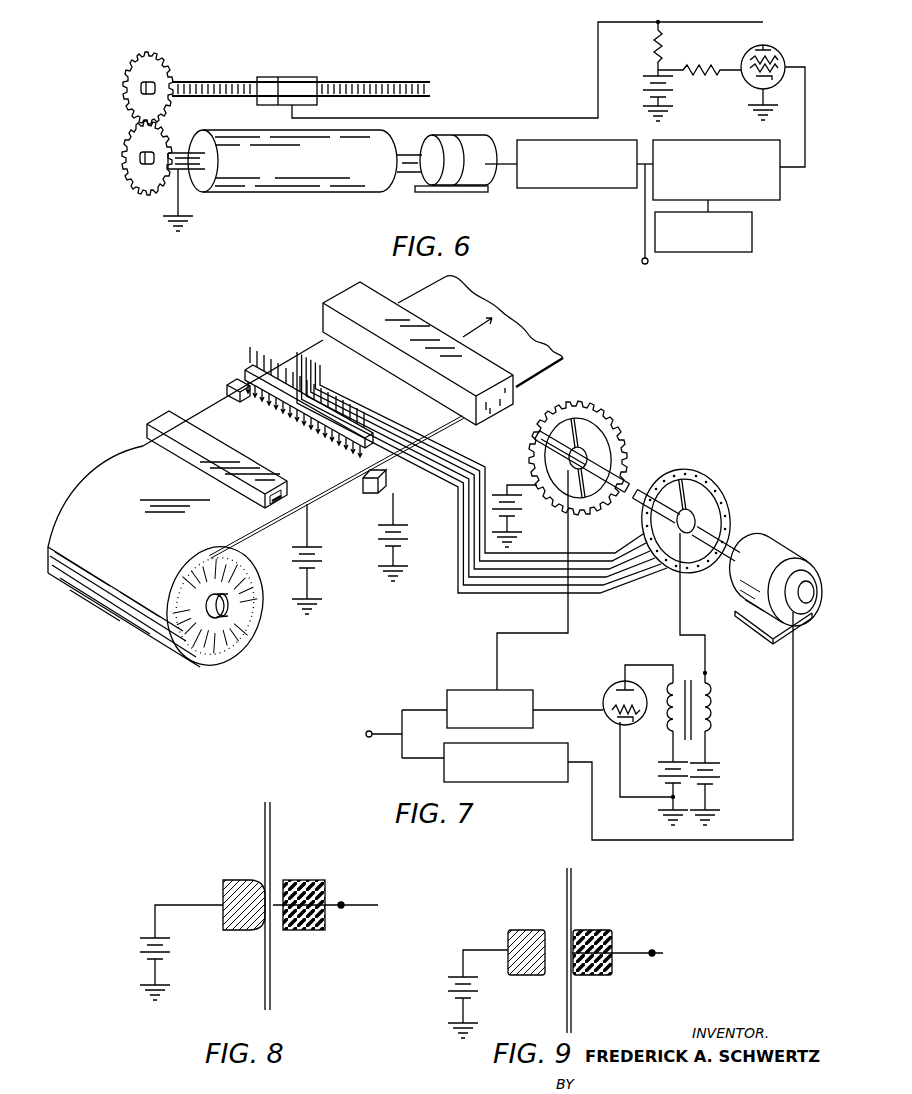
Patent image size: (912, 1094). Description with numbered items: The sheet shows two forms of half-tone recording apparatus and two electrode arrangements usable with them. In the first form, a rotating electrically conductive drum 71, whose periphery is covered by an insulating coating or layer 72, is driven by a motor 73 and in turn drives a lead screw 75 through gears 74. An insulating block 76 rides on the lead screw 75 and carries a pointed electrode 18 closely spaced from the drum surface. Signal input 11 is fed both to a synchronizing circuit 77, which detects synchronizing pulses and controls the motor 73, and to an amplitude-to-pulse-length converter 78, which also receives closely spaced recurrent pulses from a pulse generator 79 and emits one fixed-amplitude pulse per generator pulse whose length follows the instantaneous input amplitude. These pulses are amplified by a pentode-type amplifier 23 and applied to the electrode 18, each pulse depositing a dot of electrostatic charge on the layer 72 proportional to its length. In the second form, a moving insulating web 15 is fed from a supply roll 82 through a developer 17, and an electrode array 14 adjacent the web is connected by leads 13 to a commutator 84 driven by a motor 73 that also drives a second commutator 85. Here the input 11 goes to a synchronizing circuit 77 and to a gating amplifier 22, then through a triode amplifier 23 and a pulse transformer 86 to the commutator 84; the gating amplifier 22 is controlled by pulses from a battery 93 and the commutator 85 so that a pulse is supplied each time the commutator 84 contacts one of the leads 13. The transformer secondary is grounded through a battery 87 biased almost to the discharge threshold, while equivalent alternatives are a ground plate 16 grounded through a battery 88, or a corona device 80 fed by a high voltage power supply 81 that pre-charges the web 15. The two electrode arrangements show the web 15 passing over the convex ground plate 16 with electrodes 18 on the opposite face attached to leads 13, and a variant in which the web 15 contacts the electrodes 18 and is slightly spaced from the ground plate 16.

In FIG. 6, the signal input 11 is at (641, 258).
In FIG. 7, the leads 13 is at (618, 554).
In FIG. 8, the leads 13 is at (347, 902).
In FIG. 9, the leads 13 is at (661, 945).
In FIG. 7, the electrode array 14 is at (247, 370).
In FIG. 7, the insulating web 15 is at (532, 338).
In FIG. 8, the insulating web 15 is at (272, 820).
In FIG. 9, the insulating web 15 is at (573, 890).
In FIG. 7, the ground plate 16 is at (383, 476).
In FIG. 8, the ground plate 16 is at (243, 880).
In FIG. 9, the ground plate 16 is at (533, 930).
In FIG. 7, the developer 17 is at (345, 301).
In FIG. 6, the pointed electrode 18 is at (290, 118).
In FIG. 7, the pointed electrode 18 is at (264, 392).
In FIG. 8, the pointed electrode 18 is at (284, 900).
In FIG. 9, the pointed electrode 18 is at (612, 945).
In FIG. 7, the gating amplifier 22 is at (470, 688).
In FIG. 6, the amplifier 23 is at (773, 47).
In FIG. 7, the amplifier 23 is at (606, 693).
In FIG. 6, the electrically conductive drum 71 is at (200, 142).
In FIG. 6, the insulating coating or layer 72 is at (236, 190).
In FIG. 6, the motor 73 is at (462, 182).
In FIG. 7, the motor 73 is at (792, 536).
In FIG. 6, the gears 74 is at (137, 137).
In FIG. 6, the lead screw 75 is at (345, 82).
In FIG. 6, the insulating block 76 is at (292, 77).
In FIG. 6, the synchronizing circuit 77 is at (633, 140).
In FIG. 7, the synchronizing circuit 77 is at (561, 745).
In FIG. 6, the amplitude-to-pulse-length converter 78 is at (718, 140).
In FIG. 6, the pulse generator 79 is at (748, 250).
In FIG. 7, the corona device 80 is at (162, 420).
In FIG. 7, the high voltage power supply 81 is at (311, 562).
In FIG. 7, the supply roll 82 is at (252, 602).
In FIG. 7, the commutator 84 is at (703, 472).
In FIG. 7, the second commutator 85 is at (610, 408).
In FIG. 7, the pulse transformer 86 is at (690, 665).
In FIG. 7, the battery 87 is at (716, 766).
In FIG. 7, the battery 88 is at (400, 536).
In FIG. 8, the battery 88 is at (140, 945).
In FIG. 9, the battery 88 is at (450, 982).
In FIG. 7, the battery 93 is at (512, 510).